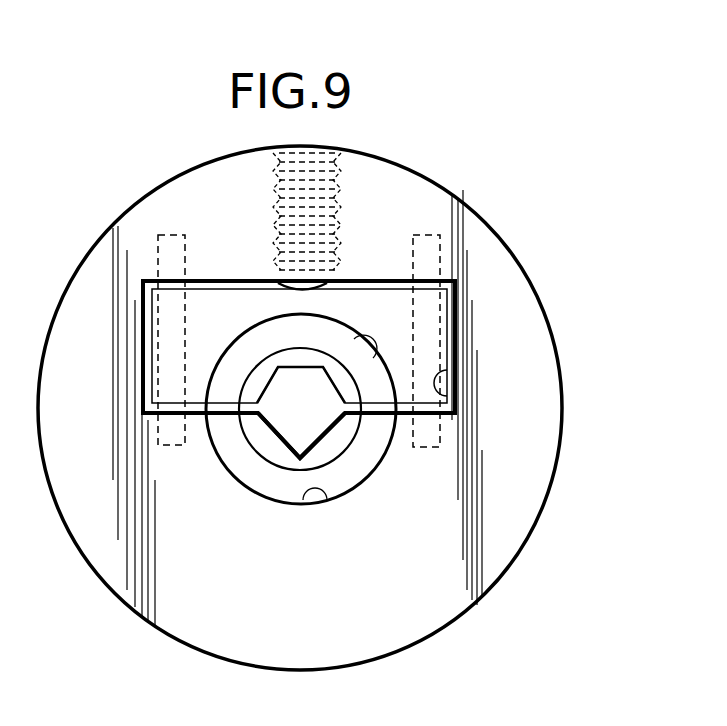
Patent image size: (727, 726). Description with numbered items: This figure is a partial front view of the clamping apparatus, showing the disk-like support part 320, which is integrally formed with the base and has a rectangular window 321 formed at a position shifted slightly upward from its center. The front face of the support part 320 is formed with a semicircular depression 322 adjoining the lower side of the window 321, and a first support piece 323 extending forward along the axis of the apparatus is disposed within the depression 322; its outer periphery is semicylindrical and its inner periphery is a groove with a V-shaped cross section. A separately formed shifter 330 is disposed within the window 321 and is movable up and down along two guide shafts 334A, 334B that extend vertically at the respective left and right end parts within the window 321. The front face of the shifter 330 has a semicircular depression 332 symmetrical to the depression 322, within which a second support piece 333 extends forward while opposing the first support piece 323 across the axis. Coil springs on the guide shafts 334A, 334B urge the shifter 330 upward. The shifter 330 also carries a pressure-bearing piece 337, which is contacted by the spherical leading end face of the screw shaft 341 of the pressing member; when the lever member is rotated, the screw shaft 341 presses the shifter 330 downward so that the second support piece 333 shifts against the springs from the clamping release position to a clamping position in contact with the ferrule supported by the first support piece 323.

The support part 320 is at (500, 530).
The rectangular window 321 is at (460, 393).
The semicircular depression 322 is at (330, 494).
The first support piece 323 is at (268, 462).
The shifter 330 is at (387, 272).
The semicircular depression 332 is at (360, 338).
The second support piece 333 is at (258, 362).
The guide shaft 334A is at (165, 235).
The guide shaft 334B is at (440, 235).
The pressure-bearing piece 337 is at (310, 305).
The screw shaft 341 is at (338, 170).